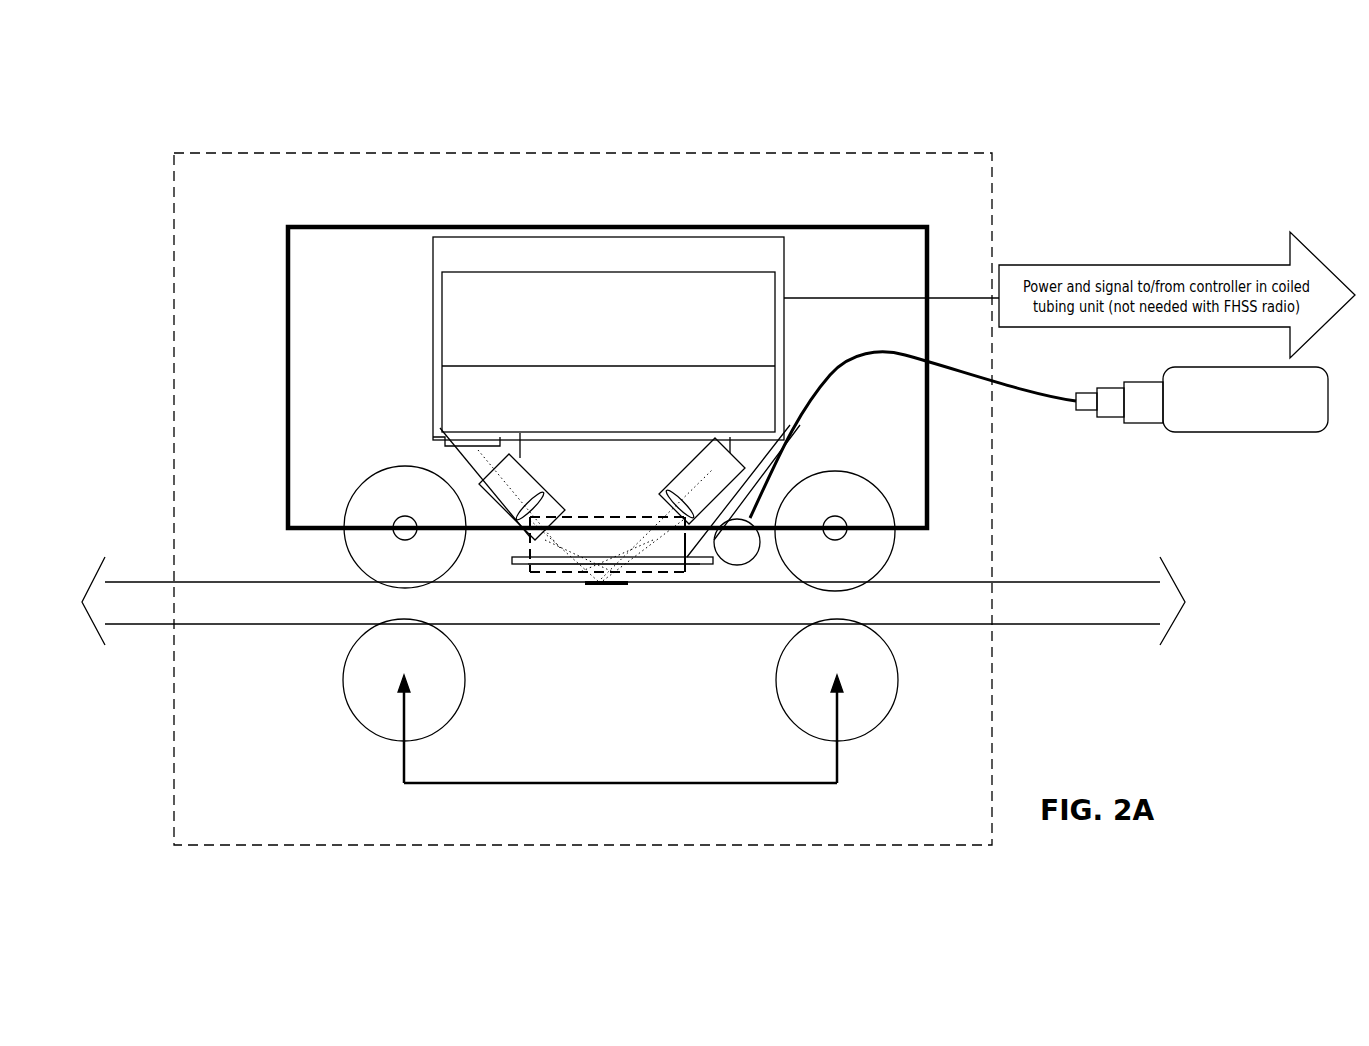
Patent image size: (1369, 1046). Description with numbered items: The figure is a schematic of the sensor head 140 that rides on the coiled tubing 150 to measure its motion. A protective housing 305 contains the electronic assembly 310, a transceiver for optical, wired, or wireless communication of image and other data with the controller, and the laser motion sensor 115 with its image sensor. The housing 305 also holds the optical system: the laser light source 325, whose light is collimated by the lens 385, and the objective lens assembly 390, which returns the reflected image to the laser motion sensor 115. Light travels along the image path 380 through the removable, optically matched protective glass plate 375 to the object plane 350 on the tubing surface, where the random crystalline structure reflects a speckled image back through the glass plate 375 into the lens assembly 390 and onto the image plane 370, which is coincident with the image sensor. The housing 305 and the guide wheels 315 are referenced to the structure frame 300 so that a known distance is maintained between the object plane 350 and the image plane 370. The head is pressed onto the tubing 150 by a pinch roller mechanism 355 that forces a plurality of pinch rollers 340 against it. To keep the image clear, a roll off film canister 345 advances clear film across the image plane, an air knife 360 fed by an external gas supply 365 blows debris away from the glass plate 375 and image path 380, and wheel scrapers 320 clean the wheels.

The sensor head 140 is at (585, 153).
The coiled tubing 150 is at (1083, 598).
The structure frame 300 is at (355, 227).
The protective housing 305 is at (433, 290).
The electronic assembly 310 is at (442, 318).
The laser motion sensor 115 is at (440, 437).
The image plane 370 is at (462, 446).
The objective lens assembly 390 is at (542, 503).
The laser light source 325 is at (712, 446).
The lens 385 is at (680, 478).
The wheel scrapers 320 is at (768, 500).
The guide wheels 315 is at (400, 466).
The protective glass plate 375 is at (503, 562).
The roll off film canister 345 is at (553, 562).
The object plane 350 is at (600, 585).
The image path 380 is at (660, 540).
The air knife 360 is at (733, 567).
The external gas supply 365 is at (1197, 432).
The pinch rollers 340 is at (344, 690).
The pinch roller mechanism 355 is at (550, 783).